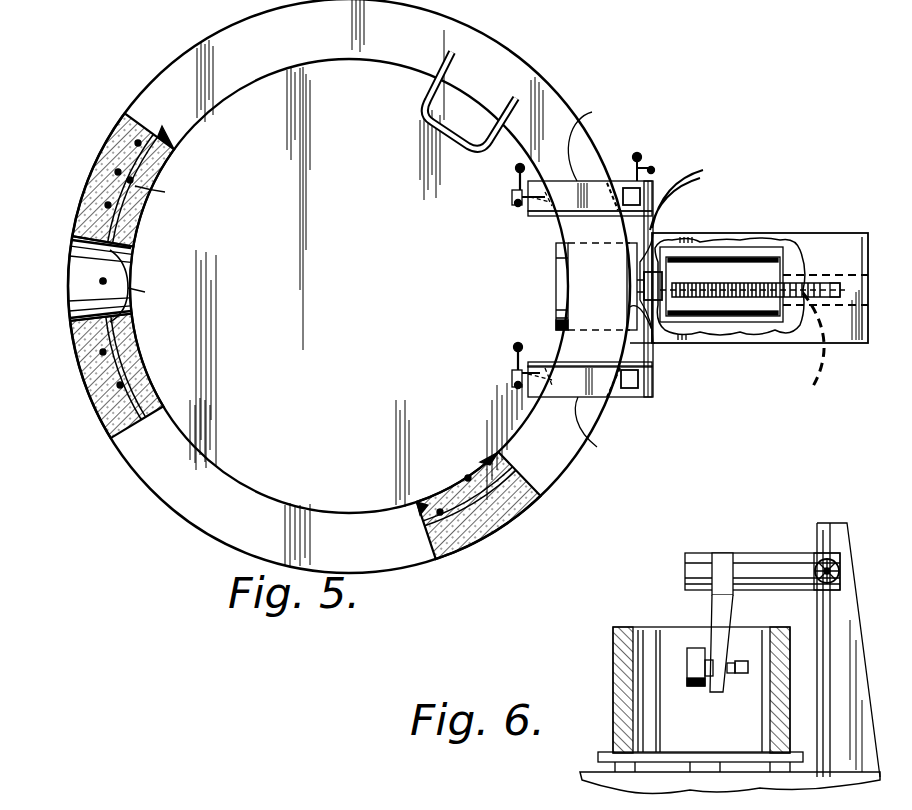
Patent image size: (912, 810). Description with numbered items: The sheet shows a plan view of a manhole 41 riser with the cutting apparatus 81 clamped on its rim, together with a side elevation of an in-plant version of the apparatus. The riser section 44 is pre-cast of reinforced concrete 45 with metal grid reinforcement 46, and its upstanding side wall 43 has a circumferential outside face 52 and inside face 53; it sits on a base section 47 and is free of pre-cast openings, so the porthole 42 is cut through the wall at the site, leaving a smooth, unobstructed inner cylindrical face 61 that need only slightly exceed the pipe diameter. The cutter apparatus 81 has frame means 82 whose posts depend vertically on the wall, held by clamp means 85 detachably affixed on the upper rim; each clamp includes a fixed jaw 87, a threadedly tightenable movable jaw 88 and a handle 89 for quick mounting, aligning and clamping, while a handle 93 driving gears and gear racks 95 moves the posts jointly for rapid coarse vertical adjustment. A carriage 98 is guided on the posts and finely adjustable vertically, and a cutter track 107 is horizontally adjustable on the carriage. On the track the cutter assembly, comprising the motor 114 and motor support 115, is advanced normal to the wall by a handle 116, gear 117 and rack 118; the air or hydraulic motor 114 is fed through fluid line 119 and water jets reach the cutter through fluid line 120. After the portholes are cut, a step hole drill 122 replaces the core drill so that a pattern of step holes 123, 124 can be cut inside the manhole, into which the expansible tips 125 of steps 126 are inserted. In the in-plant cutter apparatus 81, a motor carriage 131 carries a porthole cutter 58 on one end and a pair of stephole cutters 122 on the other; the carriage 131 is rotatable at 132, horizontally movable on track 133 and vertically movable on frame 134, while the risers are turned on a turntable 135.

In FIG. 5, the manhole 41 is at (92, 122).
In FIG. 5, the porthole 42 is at (80, 279).
In FIG. 5, the upstanding side wall 43 is at (585, 278).
In FIG. 5, the cylindrical riser section 44 is at (540, 470).
In FIG. 5, the reinforced concrete 45 is at (96, 186).
In FIG. 5, the metal grid reinforcement 46 is at (162, 191).
In FIG. 5, the base section 47 is at (324, 388).
In FIG. 5, the outside face 52 is at (540, 52).
In FIG. 5, the inside face 53 is at (505, 162).
In FIG. 6, the rotary cutter 58 is at (696, 655).
In FIG. 5, the inner cylindrical face 61 is at (138, 286).
In FIG. 5, the cutter apparatus 81 is at (765, 328).
In FIG. 6, the cutter apparatus 81 is at (692, 580).
In FIG. 5, the frame means 82 is at (654, 212).
In FIG. 5, the clamp means 85 is at (591, 278).
In FIG. 5, the fixed jaw 87 is at (609, 181).
In FIG. 5, the movable jaw 88 is at (540, 214).
In FIG. 5, the handle 89 is at (514, 196).
In FIG. 5, the handle 93 is at (640, 160).
In FIG. 5, the gear racks 95 is at (641, 198).
In FIG. 5, the carriage 98 is at (648, 350).
In FIG. 5, the cutter track 107 is at (780, 245).
In FIG. 5, the motor 114 is at (712, 255).
In FIG. 5, the motor support 115 is at (776, 285).
In FIG. 5, the handle 116 is at (720, 300).
In FIG. 5, the gear 117 is at (722, 280).
In FIG. 5, the rack 118 is at (760, 283).
In FIG. 5, the fluid line 119 is at (822, 370).
In FIG. 5, the fluid line 120 is at (645, 284).
In FIG. 6, the step hole drill 122 is at (740, 662).
In FIG. 5, the step hole 123 is at (437, 68).
In FIG. 5, the step hole 124 is at (512, 110).
In FIG. 5, the expansible tips 125 is at (430, 78).
In FIG. 5, the steps 126 is at (422, 112).
In FIG. 6, the motor carriage 131 is at (722, 682).
In FIG. 6, the rotation point 132 is at (718, 598).
In FIG. 6, the track 133 is at (770, 585).
In FIG. 6, the frame 134 is at (830, 615).
In FIG. 6, the turntable 135 is at (605, 754).